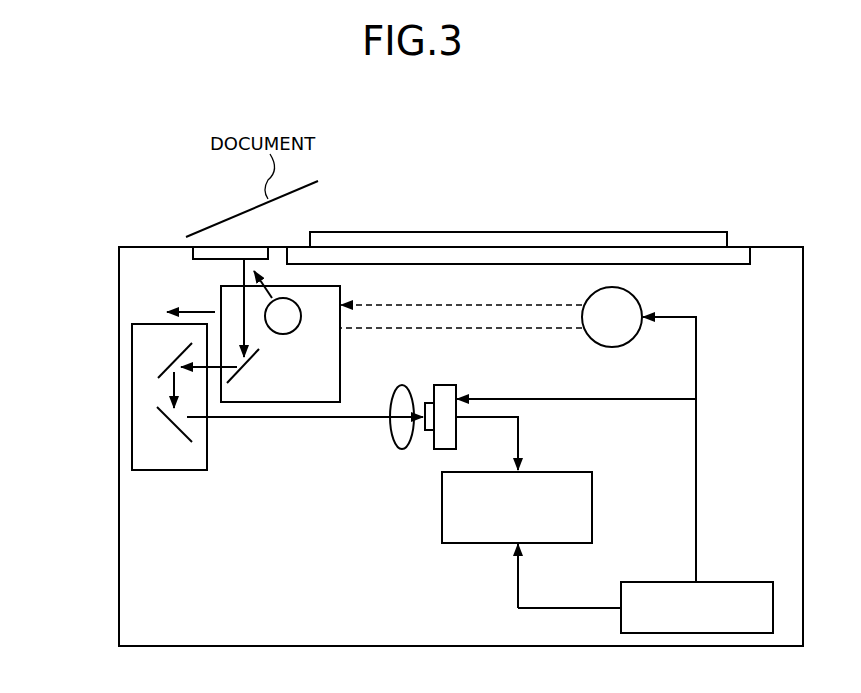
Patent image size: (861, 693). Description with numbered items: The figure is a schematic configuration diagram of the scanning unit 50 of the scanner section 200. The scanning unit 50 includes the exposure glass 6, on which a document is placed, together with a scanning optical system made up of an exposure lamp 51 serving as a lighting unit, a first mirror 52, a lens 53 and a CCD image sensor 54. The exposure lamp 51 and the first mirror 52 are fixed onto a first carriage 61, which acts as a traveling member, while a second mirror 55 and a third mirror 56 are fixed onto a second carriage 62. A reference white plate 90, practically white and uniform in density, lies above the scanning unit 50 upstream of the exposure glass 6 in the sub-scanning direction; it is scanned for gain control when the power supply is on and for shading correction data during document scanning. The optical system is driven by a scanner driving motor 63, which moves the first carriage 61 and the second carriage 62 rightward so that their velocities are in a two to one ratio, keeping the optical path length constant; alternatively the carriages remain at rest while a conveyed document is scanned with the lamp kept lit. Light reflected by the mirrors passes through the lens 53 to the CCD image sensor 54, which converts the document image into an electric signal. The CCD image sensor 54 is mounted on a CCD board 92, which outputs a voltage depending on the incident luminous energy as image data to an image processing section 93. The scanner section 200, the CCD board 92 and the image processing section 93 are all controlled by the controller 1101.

The scanning unit 50 is at (90, 352).
The scanner section 200 is at (612, 196).
The exposure glass 6 is at (738, 258).
The reference white plate 90 is at (232, 232).
The first carriage 61 is at (340, 352).
The exposure lamp 51 is at (290, 332).
The first mirror 52 is at (246, 366).
The second carriage 62 is at (169, 472).
The second mirror 55 is at (178, 360).
The third mirror 56 is at (176, 420).
The lens 53 is at (394, 440).
The CCD image sensor 54 is at (424, 430).
The CCD board 92 is at (448, 386).
The scanner driving motor 63 is at (634, 300).
The image processing section 93 is at (563, 472).
The controller 1101 is at (736, 582).